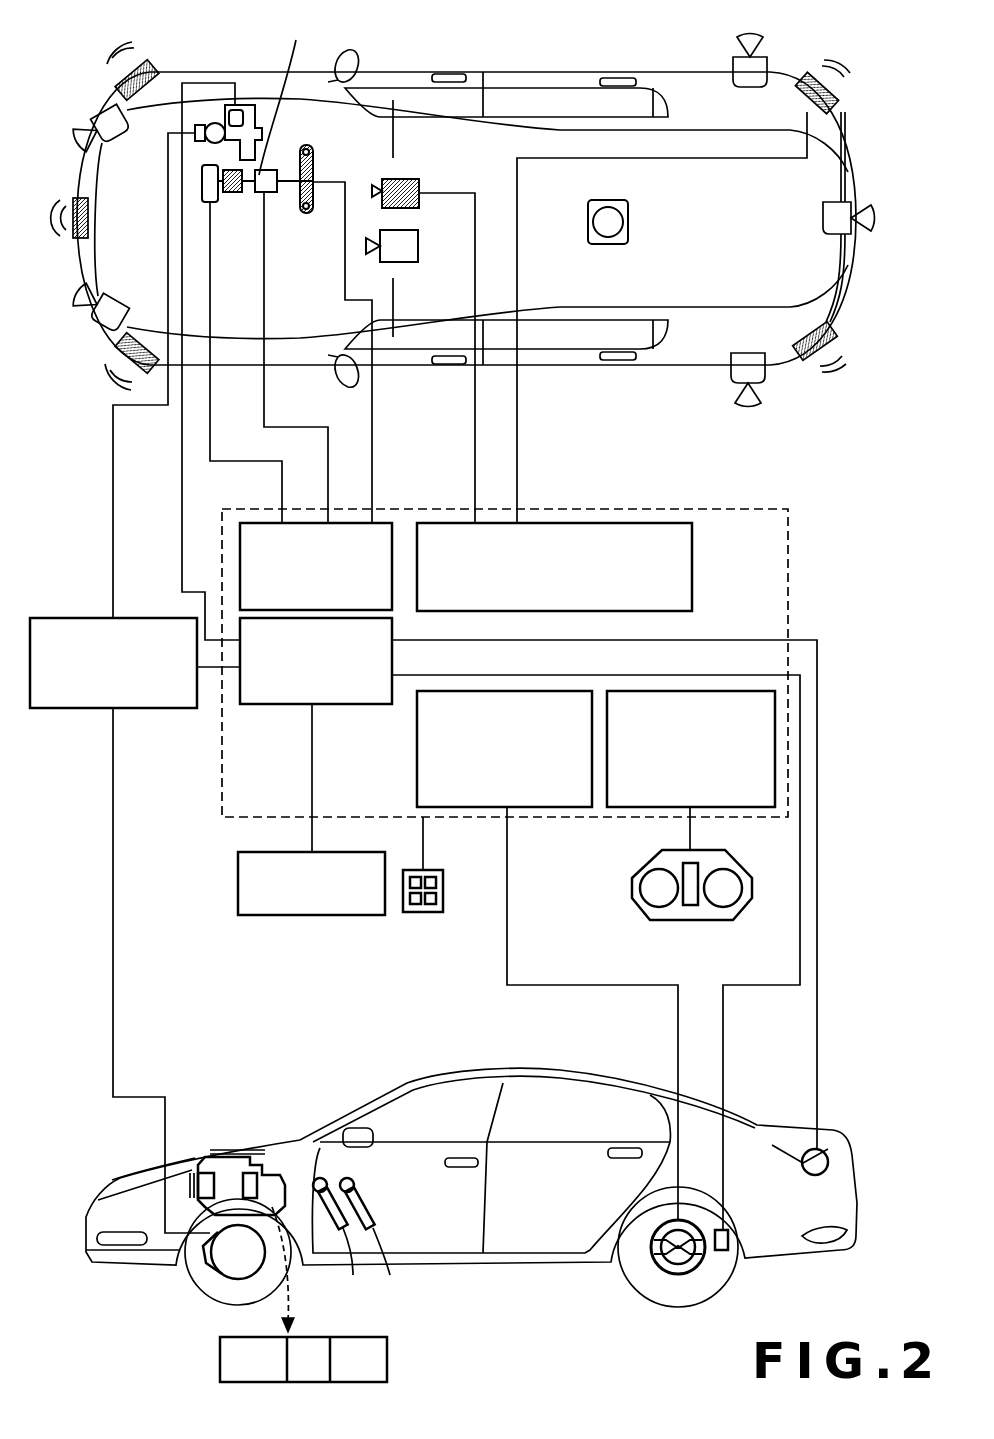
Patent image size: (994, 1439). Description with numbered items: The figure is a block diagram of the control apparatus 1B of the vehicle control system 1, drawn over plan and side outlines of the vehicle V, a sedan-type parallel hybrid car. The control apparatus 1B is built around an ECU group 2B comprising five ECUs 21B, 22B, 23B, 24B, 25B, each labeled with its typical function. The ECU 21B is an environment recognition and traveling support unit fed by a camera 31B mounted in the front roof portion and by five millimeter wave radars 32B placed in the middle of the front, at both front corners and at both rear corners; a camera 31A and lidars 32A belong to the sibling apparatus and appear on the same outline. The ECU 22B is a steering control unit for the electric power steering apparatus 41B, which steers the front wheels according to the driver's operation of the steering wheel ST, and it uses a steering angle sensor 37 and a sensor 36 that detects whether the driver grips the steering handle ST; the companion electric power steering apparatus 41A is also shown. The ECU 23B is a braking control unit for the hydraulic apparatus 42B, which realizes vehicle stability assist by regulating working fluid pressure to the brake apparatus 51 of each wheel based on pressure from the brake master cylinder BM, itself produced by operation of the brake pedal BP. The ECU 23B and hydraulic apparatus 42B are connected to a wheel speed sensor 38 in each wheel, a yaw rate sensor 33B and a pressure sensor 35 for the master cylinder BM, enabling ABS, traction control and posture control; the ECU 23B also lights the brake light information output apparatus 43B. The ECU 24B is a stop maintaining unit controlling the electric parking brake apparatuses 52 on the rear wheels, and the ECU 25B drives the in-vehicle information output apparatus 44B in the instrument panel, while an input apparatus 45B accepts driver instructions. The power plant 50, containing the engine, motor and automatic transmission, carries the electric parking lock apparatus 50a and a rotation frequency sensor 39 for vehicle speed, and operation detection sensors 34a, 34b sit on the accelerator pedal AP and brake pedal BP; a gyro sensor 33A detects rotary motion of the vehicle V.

The vehicle control system 1 is at (876, 370).
The control apparatus 1B is at (862, 490).
The ECU group 2B is at (428, 509).
The ECU 21B is at (545, 523).
The ECU 22B is at (258, 523).
The ECU 23B is at (260, 704).
The ECU 24B is at (417, 770).
The ECU 25B is at (637, 807).
The camera 31A is at (397, 262).
The camera 31B is at (405, 178).
The lidar 32A is at (122, 140).
The millimeter wave radar 32B is at (156, 68).
The gyro sensor 33A is at (600, 244).
The yaw rate sensor 33B is at (300, 915).
The operation detection sensor 34a is at (318, 1176).
The operation detection sensor 34b is at (352, 1178).
The pressure sensor 35 is at (236, 110).
The sensor 36 is at (313, 175).
The steering angle sensor 37 is at (212, 202).
The wheel speed sensor 38 is at (727, 1252).
The rotation frequency sensor 39 is at (247, 1173).
The electric power steering apparatus 41A is at (234, 193).
The electric power steering apparatus 41B is at (268, 168).
The hydraulic apparatus 42B is at (76, 618).
The information output apparatus 43B is at (830, 1164).
The information output apparatus 44B is at (645, 918).
The input apparatus 45B is at (423, 912).
The power plant 50 is at (272, 1157).
The electric parking lock apparatus 50a is at (203, 1173).
The brake apparatus 51 is at (202, 1264).
The electric parking brake apparatus 52 is at (665, 1273).
The brake master cylinder BM is at (250, 105).
The steering wheel ST is at (313, 148).
The accelerator pedal AP is at (354, 1265).
The brake pedal BP is at (397, 1265).
The vehicle V is at (870, 100).